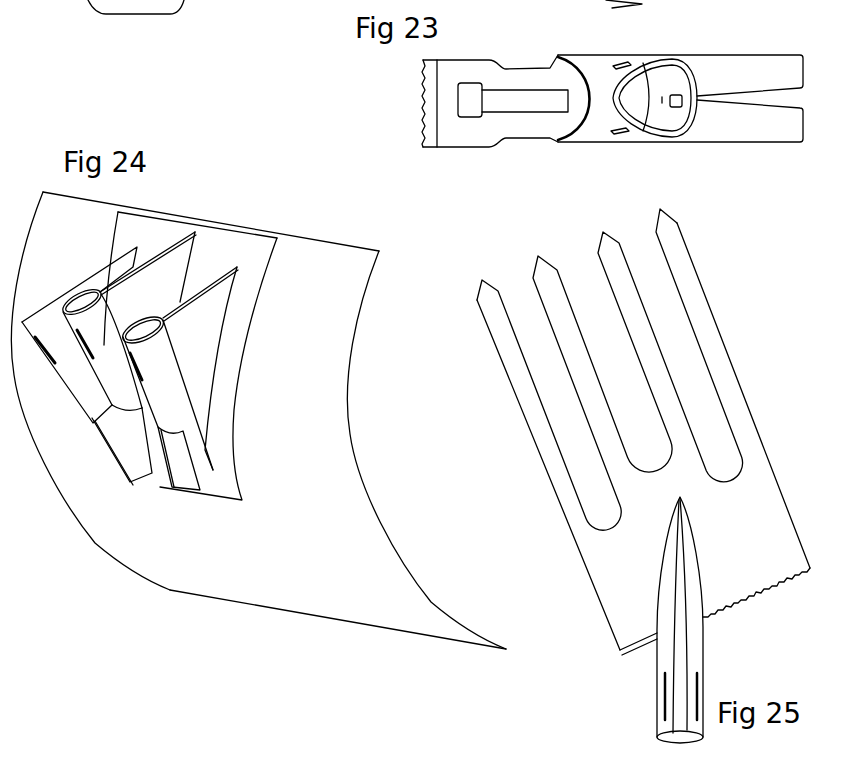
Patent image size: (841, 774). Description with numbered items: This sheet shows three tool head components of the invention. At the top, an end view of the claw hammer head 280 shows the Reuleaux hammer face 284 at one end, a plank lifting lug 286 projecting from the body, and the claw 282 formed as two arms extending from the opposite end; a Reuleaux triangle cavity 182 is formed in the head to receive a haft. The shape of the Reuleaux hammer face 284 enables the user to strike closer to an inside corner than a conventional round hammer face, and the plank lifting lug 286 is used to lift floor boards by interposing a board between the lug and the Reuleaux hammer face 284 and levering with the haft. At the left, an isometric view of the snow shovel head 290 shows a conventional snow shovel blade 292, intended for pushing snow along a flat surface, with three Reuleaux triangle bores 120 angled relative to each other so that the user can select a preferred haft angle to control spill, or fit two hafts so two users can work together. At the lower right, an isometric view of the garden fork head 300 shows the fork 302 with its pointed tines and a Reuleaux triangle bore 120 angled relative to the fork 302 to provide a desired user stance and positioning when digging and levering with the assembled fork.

In FIG. 23, the claw hammer head 280 is at (700, 45).
In FIG. 23, the claw 282 is at (800, 143).
In FIG. 23, the Reuleaux hammer face 284 is at (423, 120).
In FIG. 23, the plank lifting lug 286 is at (498, 90).
In FIG. 23, the Reuleaux triangle cavity 182 is at (633, 103).
In FIG. 25, the Reuleaux triangle cavity 182 is at (675, 736).
In FIG. 24, the Reuleaux triangle bore 120 is at (181, 466).
In FIG. 24, the snow shovel head 290 is at (148, 607).
In FIG. 24, the snow shovel blade 292 is at (252, 607).
In FIG. 25, the garden fork head 300 is at (720, 624).
In FIG. 25, the fork 302 is at (737, 382).